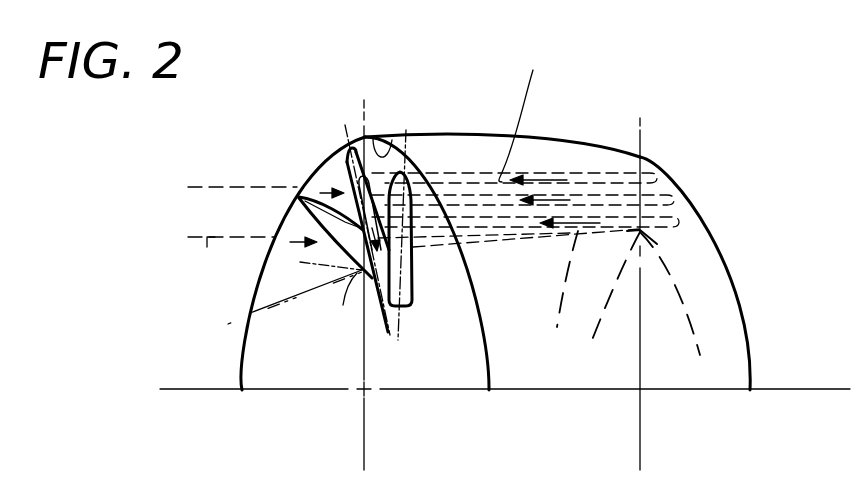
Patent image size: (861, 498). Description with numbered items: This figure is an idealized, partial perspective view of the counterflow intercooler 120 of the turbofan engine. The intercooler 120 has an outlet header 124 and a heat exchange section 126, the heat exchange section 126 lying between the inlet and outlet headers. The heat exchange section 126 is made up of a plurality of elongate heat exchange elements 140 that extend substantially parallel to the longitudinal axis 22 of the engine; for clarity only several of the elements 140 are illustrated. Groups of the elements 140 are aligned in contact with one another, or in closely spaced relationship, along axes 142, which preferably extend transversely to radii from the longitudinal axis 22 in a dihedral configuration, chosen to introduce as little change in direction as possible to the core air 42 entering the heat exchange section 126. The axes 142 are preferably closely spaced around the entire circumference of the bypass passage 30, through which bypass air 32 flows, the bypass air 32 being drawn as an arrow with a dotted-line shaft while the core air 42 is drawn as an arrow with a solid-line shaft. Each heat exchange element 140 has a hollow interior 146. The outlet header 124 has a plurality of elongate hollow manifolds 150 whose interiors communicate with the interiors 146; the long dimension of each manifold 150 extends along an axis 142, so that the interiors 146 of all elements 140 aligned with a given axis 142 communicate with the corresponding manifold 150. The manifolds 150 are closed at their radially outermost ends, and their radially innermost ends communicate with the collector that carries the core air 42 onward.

The counterflow intercooler 120 is at (722, 22).
The longitudinal axis 22 is at (363, 392).
The bypass passage 30 is at (393, 137).
The bypass air 32 is at (253, 190).
The core air 42 is at (363, 232).
The outlet header 124 is at (316, 184).
The heat exchange section 126 is at (333, 145).
The heat exchange element 140 is at (462, 176).
The axis 142 is at (340, 115).
The hollow interior 146 is at (536, 114).
The manifold 150 is at (387, 288).